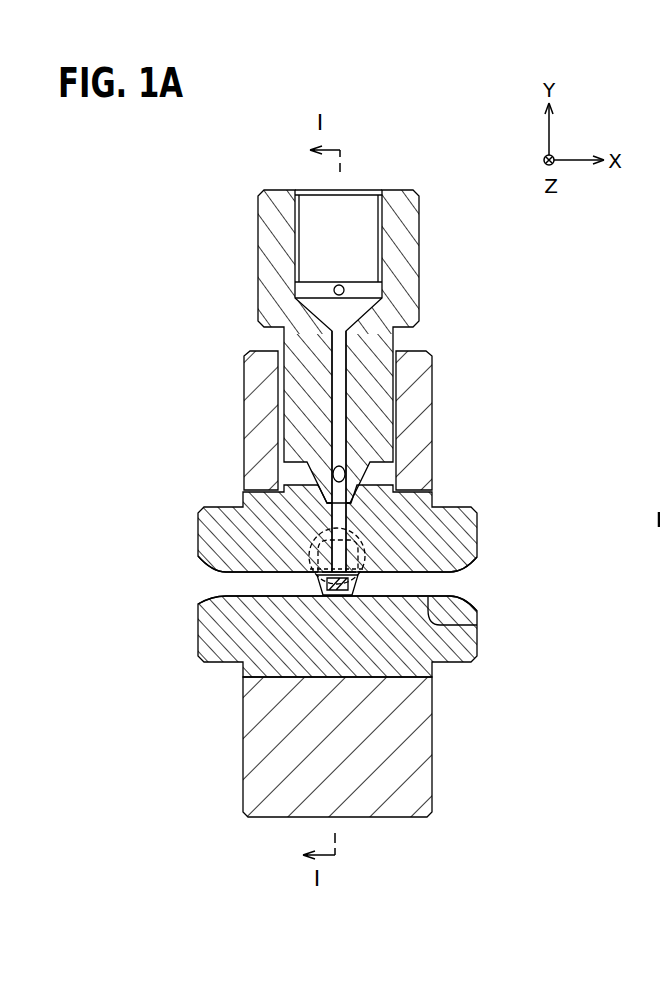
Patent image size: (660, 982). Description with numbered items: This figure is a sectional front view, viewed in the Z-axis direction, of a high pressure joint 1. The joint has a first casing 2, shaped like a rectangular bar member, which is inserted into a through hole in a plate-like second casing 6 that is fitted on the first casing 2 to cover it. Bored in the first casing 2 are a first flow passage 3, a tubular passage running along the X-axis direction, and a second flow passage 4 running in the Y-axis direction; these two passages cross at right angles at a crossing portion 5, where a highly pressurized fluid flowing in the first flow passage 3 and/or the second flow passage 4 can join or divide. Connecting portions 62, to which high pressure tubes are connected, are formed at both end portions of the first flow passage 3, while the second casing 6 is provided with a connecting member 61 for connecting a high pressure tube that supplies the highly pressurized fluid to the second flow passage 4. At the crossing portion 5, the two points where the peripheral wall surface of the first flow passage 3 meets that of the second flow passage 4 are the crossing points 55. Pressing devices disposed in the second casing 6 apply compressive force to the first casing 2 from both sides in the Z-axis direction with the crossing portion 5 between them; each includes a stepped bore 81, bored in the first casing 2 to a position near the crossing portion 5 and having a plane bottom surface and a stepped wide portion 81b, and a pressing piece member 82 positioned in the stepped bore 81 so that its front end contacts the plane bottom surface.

The high pressure joint 1 is at (508, 322).
The first casing 2 is at (478, 521).
The first flow passage 3 is at (477, 636).
The second flow passage 4 is at (350, 520).
The crossing portion 5 is at (392, 586).
The second casing 6 is at (244, 425).
The crossing points 55 is at (308, 577).
The connecting member 61 is at (259, 262).
The connecting portions 62 is at (200, 598).
The stepped bore 81 is at (324, 545).
The pressing piece member 82 is at (324, 563).
The stepped wide portion 81b is at (313, 570).